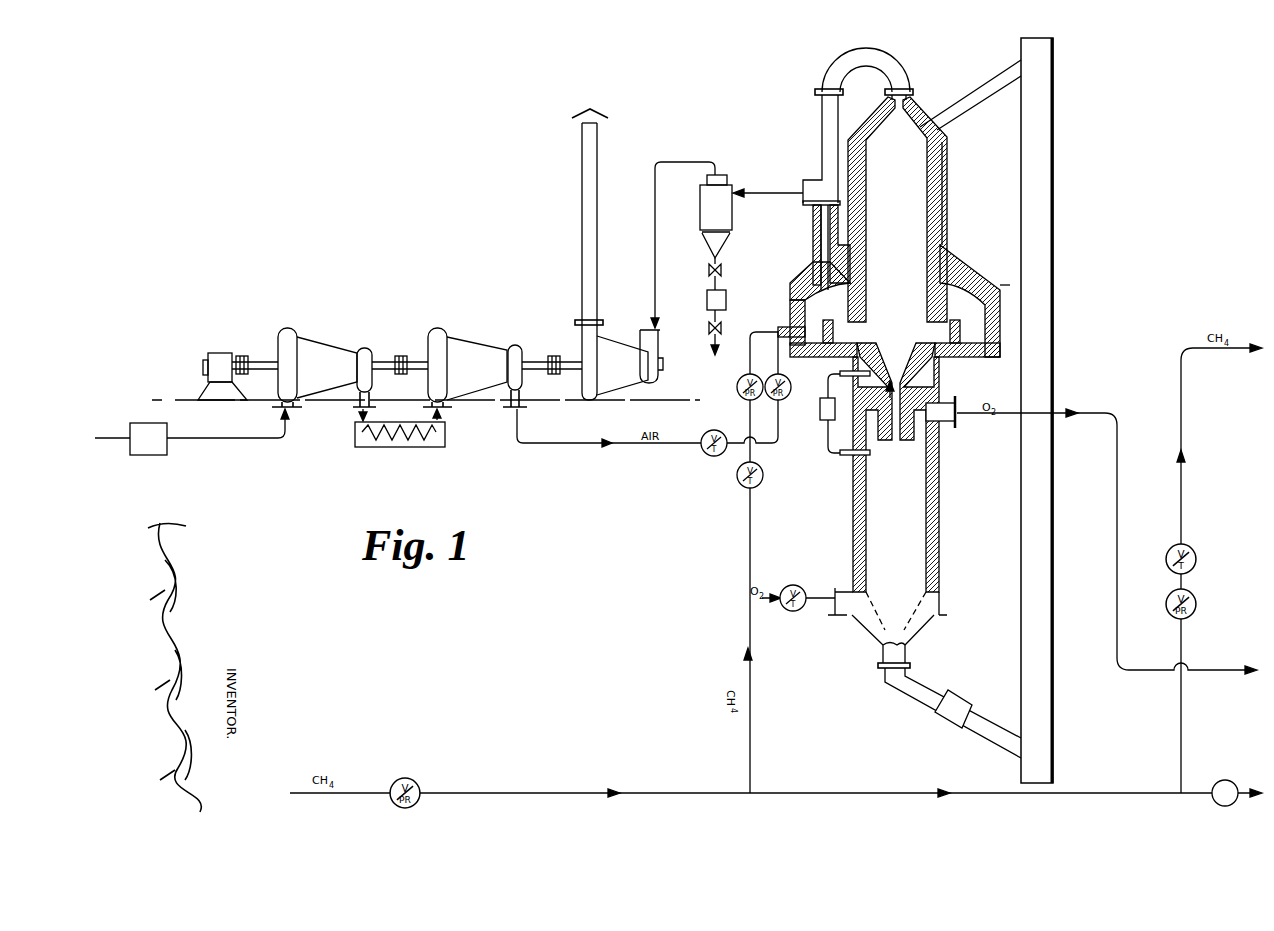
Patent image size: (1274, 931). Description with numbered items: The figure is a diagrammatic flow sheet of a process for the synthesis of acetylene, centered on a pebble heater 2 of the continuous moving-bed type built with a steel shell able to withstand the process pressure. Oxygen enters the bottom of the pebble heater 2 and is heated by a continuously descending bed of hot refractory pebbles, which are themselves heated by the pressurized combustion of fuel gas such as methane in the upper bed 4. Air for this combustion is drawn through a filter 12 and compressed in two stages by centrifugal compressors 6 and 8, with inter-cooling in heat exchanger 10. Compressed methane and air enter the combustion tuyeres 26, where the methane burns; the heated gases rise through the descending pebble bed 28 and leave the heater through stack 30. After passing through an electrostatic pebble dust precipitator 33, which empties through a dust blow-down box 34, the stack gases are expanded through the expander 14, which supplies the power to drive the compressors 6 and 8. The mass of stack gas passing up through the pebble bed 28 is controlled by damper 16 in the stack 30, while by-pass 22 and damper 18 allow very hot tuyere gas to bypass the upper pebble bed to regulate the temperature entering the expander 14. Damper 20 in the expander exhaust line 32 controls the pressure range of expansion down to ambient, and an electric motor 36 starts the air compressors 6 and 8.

The pebble heater 2 is at (942, 514).
The upper bed 4 is at (947, 221).
The centrifugal compressor 6 is at (324, 367).
The centrifugal compressor 8 is at (475, 367).
The heat exchanger 10 is at (400, 442).
The filter 12 is at (192, 432).
The expander 14 is at (622, 365).
The damper 16 is at (832, 166).
The damper 18 is at (818, 244).
The damper 20 is at (588, 311).
The by-pass 22 is at (826, 262).
The combustion tuyeres 26 is at (786, 327).
The pebble bed 28 is at (912, 204).
The stack 30 is at (893, 61).
The expander exhaust line 32 is at (597, 177).
The electrostatic pebble dust precipitator 33 is at (734, 223).
The dust blow-down box 34 is at (726, 291).
The electric motor 36 is at (222, 376).